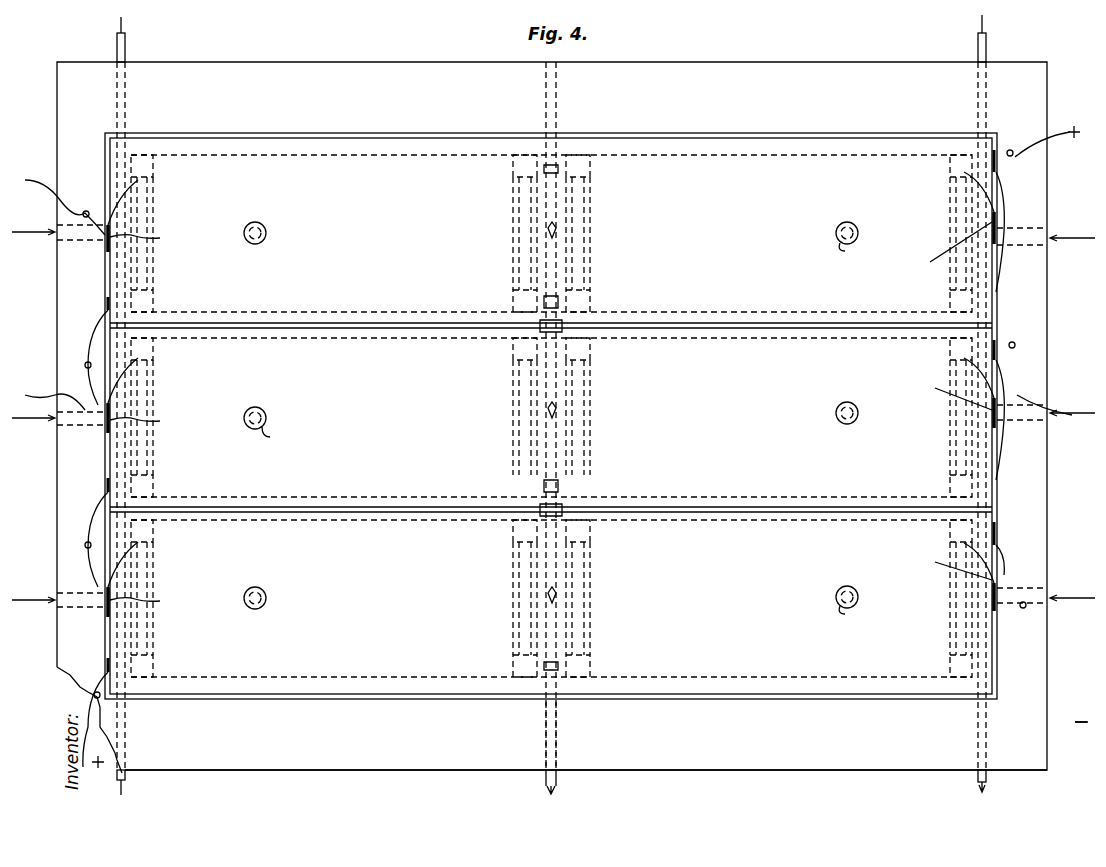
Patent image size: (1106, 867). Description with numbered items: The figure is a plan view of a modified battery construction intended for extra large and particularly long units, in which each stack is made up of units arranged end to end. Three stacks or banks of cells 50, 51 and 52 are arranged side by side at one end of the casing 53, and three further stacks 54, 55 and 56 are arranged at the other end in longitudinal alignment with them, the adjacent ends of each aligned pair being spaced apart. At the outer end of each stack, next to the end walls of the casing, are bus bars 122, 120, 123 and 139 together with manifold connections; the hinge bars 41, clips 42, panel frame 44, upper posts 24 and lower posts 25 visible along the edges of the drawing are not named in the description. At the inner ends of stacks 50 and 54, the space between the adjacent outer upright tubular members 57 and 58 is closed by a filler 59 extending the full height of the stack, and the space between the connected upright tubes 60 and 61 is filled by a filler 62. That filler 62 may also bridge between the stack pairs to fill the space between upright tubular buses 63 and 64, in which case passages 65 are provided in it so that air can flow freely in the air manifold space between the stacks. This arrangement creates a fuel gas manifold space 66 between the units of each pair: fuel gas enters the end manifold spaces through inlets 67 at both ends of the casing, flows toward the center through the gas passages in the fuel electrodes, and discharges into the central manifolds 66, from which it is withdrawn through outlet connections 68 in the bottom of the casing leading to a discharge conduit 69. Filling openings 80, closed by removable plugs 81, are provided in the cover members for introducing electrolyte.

The upper post 24 is at (126, 43).
The lower post 25 is at (128, 780).
The hinge bar 41 is at (110, 237).
The hinge wire clip 42 is at (106, 300).
The panel frame 44 is at (927, 130).
The stack of cells 50 is at (334, 233).
The stack of cells 51 is at (334, 417).
The stack of cells 52 is at (334, 598).
The casing 53 is at (852, 770).
The stack of cells 54 is at (769, 233).
The stack of cells 55 is at (769, 417).
The stack of cells 56 is at (769, 598).
The outer upright tubular member 57 is at (513, 176).
The outer upright tubular member 58 is at (590, 172).
The filler 59 is at (556, 162).
The upright tube 60 is at (513, 298).
The upright tube 61 is at (590, 296).
The filler 62 is at (560, 296).
The upright tubular bus 63 is at (513, 352).
The upright tubular bus 64 is at (590, 350).
The passage 65 is at (562, 324).
The fuel gas manifold space 66 is at (566, 222).
The inlet 67 is at (57, 214).
The outlet connection 68 is at (546, 237).
The discharge conduit 69 is at (557, 733).
The filling opening 80 is at (840, 228).
The removable plug 81 is at (846, 250).
The bus bar 120 is at (153, 262).
The bus bar 122 is at (153, 167).
The bus bar 123 is at (153, 301).
The bus bar 139 is at (107, 248).